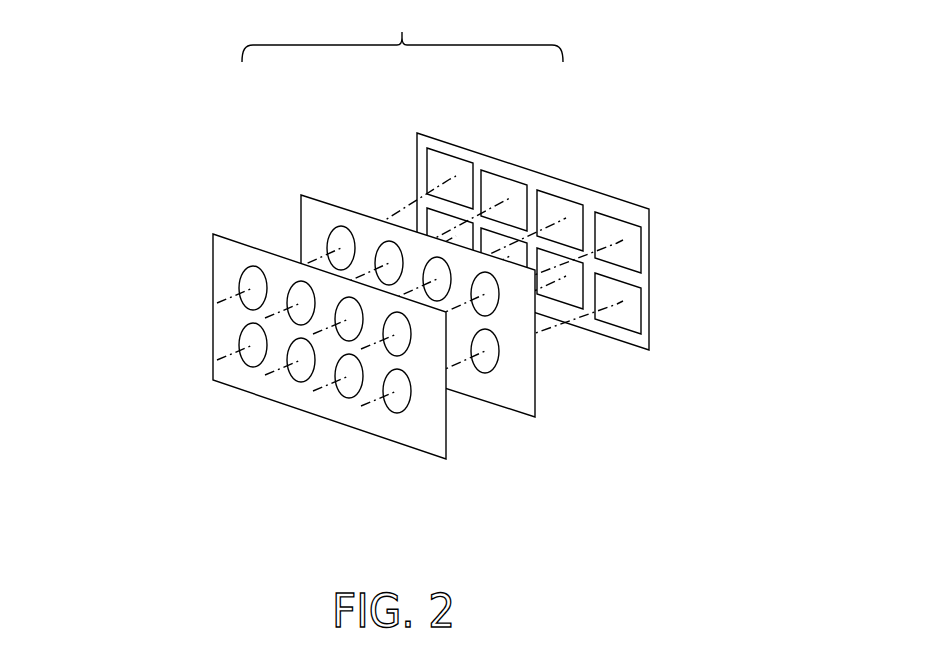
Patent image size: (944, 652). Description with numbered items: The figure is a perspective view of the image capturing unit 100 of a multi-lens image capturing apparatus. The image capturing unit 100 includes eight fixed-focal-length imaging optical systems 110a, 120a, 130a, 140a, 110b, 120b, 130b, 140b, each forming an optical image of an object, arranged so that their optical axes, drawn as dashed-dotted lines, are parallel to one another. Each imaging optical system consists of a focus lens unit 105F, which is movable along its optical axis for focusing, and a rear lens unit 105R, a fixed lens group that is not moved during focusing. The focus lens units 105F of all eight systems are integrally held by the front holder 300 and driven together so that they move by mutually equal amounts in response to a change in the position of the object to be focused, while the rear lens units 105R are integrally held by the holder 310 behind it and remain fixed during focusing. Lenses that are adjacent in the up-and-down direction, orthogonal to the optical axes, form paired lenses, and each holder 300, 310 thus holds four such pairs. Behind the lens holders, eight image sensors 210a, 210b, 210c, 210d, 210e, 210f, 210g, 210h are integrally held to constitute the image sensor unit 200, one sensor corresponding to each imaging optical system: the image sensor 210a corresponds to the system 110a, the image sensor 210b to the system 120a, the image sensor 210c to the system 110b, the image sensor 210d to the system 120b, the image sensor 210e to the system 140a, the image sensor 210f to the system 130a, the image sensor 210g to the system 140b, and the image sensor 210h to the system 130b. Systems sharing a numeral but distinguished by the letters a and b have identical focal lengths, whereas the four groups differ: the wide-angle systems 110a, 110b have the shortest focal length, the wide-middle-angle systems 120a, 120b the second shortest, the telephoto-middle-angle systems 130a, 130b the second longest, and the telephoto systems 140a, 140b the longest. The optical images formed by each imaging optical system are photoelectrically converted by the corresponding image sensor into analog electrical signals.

The image capturing unit 100 is at (402, 31).
The image sensor unit 200 is at (620, 210).
The image sensor 210a is at (432, 180).
The image sensor 210b is at (513, 198).
The image sensor 210c is at (573, 212).
The image sensor 210d is at (628, 247).
The image sensor 210e is at (437, 217).
The image sensor 210f is at (489, 238).
The image sensor 210g is at (576, 288).
The image sensor 210h is at (628, 311).
The holder 300 is at (446, 459).
The holder 310 is at (535, 417).
The focus lens unit 105F is at (300, 290).
The rear lens unit 105R is at (388, 252).
The imaging optical system 110a is at (233, 280).
The imaging optical system 120a is at (278, 300).
The imaging optical system 130a is at (290, 384).
The imaging optical system 140a is at (238, 363).
The imaging optical system 110b is at (336, 341).
The imaging optical system 120b is at (407, 350).
The imaging optical system 130b is at (408, 416).
The imaging optical system 140b is at (337, 400).